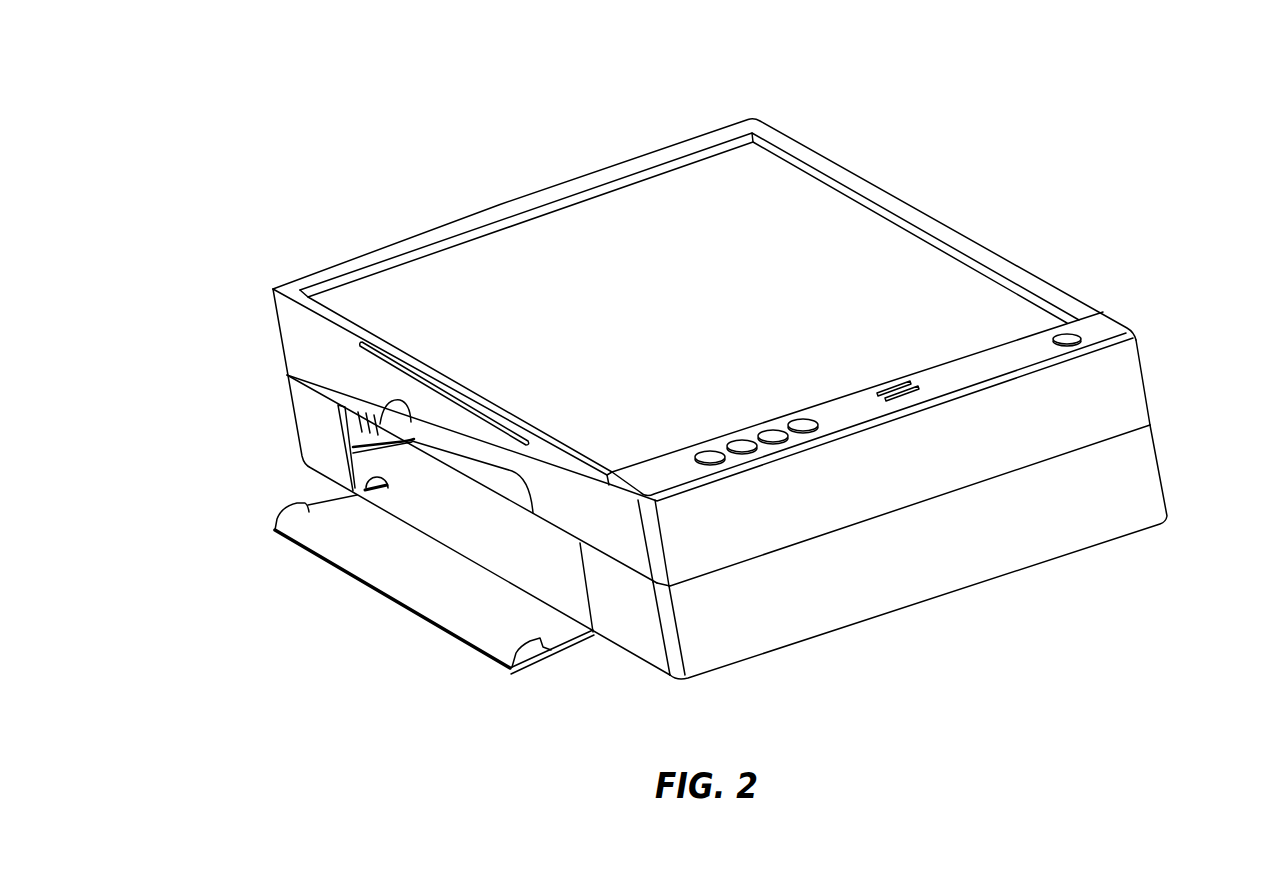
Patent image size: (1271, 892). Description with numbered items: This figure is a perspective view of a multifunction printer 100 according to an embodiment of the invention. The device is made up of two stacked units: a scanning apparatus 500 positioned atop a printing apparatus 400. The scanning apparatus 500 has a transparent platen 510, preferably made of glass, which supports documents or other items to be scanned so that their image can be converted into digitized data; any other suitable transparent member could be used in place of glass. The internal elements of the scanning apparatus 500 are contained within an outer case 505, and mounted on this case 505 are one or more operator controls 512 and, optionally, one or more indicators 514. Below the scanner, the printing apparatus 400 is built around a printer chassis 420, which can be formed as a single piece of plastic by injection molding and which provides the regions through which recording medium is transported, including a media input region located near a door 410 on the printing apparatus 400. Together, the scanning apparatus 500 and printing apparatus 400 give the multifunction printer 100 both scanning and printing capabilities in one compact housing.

The multifunction printer 100 is at (345, 143).
The scanning apparatus 500 is at (248, 323).
The transparent platen 510 is at (648, 208).
The operator controls 512 is at (773, 430).
The indicators 514 is at (1080, 333).
The outer case 505 is at (1122, 400).
The printing apparatus 400 is at (273, 418).
The printer chassis 420 is at (1077, 515).
The door 410 is at (411, 587).